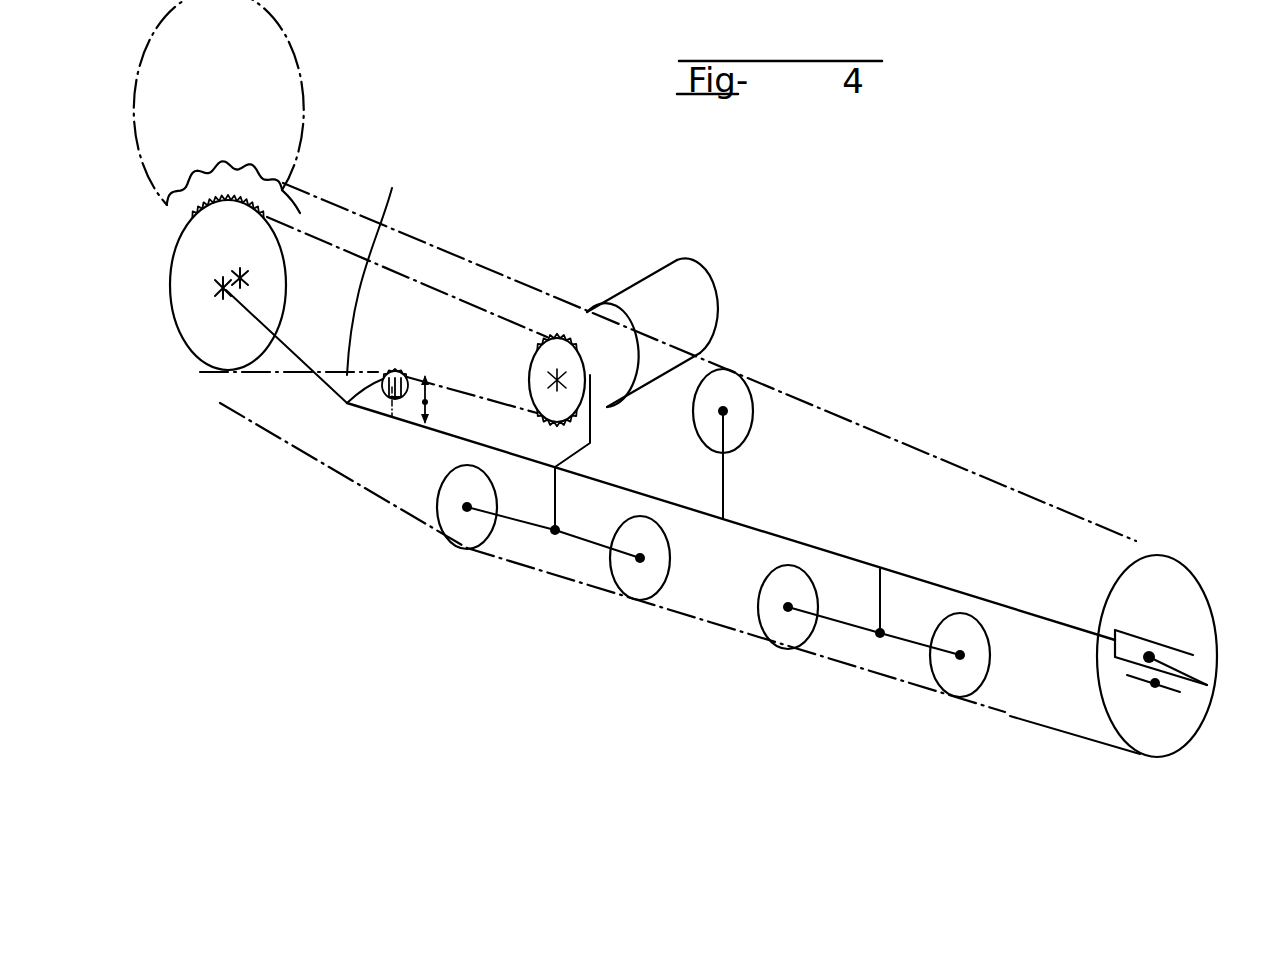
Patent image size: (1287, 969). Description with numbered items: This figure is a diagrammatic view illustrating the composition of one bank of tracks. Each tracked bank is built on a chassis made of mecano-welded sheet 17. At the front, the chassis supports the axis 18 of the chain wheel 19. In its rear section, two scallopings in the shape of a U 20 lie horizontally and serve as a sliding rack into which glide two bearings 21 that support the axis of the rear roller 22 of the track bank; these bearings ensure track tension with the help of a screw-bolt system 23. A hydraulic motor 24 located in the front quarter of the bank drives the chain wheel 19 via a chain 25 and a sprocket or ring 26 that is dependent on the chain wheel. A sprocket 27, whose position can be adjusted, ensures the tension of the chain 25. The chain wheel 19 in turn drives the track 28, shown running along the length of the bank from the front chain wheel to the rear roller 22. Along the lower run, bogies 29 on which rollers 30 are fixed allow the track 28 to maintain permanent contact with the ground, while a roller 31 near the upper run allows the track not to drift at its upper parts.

The mecano-welded sheet 17 is at (328, 384).
The axis of chain wheel 18 is at (223, 293).
The chain wheel 19 is at (243, 168).
The U-shaped scallopings 20 is at (1140, 635).
The bearings 21 is at (1207, 685).
The rear roller 22 is at (1110, 593).
The screw-bolt system 23 is at (1156, 688).
The hydraulic motor 24 is at (683, 310).
The chain 25 is at (387, 267).
The sprocket or ring 26 is at (222, 205).
The adjustable sprocket 27 is at (347, 403).
The track 28 is at (460, 257).
The bogies 29 is at (577, 550).
The rollers 30 is at (440, 517).
The roller 31 is at (753, 393).